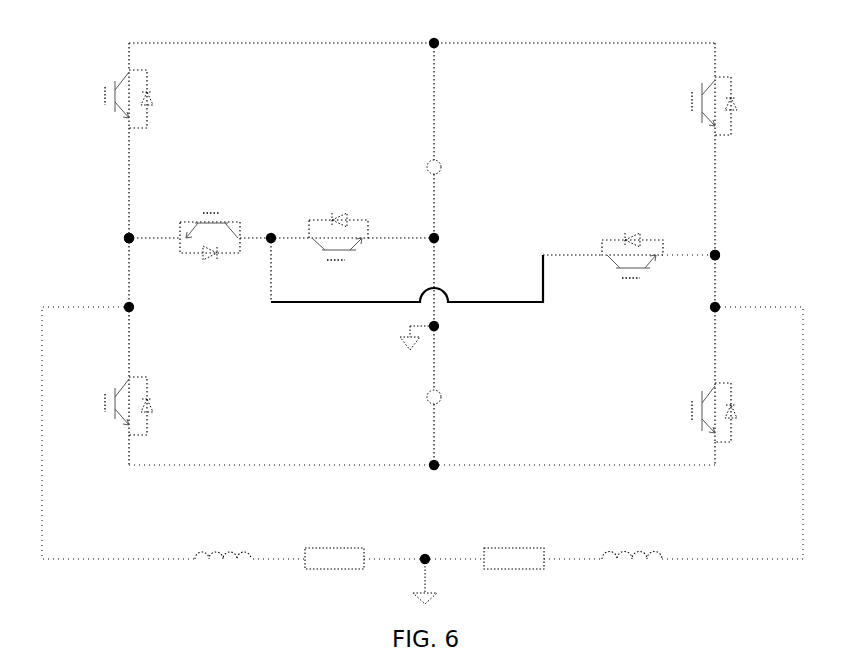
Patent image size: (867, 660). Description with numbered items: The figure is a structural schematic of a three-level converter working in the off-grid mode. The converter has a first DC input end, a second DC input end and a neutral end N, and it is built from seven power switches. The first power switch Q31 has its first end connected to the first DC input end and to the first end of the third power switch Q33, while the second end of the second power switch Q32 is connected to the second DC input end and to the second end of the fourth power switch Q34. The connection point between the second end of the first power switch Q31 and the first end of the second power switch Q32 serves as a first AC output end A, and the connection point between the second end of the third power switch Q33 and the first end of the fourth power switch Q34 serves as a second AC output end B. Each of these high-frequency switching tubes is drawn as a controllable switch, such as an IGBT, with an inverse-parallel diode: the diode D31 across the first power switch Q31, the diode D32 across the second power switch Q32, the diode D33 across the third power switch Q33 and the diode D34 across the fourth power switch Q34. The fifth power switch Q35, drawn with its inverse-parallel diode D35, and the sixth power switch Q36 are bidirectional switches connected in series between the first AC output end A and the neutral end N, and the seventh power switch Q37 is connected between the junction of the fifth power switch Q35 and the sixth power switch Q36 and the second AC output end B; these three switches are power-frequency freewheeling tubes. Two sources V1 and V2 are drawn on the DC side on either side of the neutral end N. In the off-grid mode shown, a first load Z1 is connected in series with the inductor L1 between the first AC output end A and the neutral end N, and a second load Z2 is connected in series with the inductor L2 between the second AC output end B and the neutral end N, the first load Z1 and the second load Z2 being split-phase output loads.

The first power switch Q31 is at (105, 96).
The diode D31 is at (160, 100).
The second power switch Q32 is at (105, 403).
The diode D32 is at (160, 407).
The third power switch Q33 is at (692, 102).
The diode D33 is at (744, 107).
The fourth power switch Q34 is at (692, 411).
The diode D34 is at (744, 414).
The fifth power switch Q35 is at (212, 213).
The diode D35 is at (205, 265).
The sixth power switch Q36 is at (337, 285).
The seventh power switch Q37 is at (630, 302).
The DC voltage source V1 is at (422, 167).
The DC voltage source V2 is at (422, 397).
The first AC output end A is at (114, 242).
The second AC output end B is at (707, 266).
The neutral end N is at (427, 461).
The inductor L1 is at (223, 537).
The inductor L2 is at (632, 537).
The first load Z1 is at (334, 542).
The second load Z2 is at (514, 542).